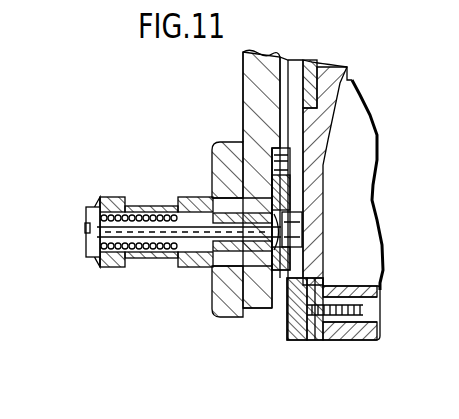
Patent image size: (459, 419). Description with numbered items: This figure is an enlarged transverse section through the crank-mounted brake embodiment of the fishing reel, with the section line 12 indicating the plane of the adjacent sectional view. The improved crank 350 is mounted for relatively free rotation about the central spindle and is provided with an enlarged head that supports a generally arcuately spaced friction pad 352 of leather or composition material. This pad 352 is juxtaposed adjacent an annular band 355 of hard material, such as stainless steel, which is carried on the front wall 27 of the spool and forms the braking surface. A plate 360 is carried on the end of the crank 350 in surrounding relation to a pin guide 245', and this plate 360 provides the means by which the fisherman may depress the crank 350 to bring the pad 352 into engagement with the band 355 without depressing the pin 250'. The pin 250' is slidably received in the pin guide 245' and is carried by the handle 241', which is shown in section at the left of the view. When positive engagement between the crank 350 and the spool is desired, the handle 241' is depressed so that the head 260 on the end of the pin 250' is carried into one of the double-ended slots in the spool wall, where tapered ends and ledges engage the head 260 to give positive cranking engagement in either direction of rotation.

The section line 12- 12 is at (292, 195).
The crank 350 is at (258, 78).
The friction pad 352 is at (281, 262).
The plate 360 is at (222, 140).
The annular band 355 is at (327, 181).
The pin 250' is at (245, 228).
The pin guide 245' is at (186, 260).
The handle 241' is at (99, 248).
The front wall 27 is at (308, 236).
The head 260 is at (304, 226).